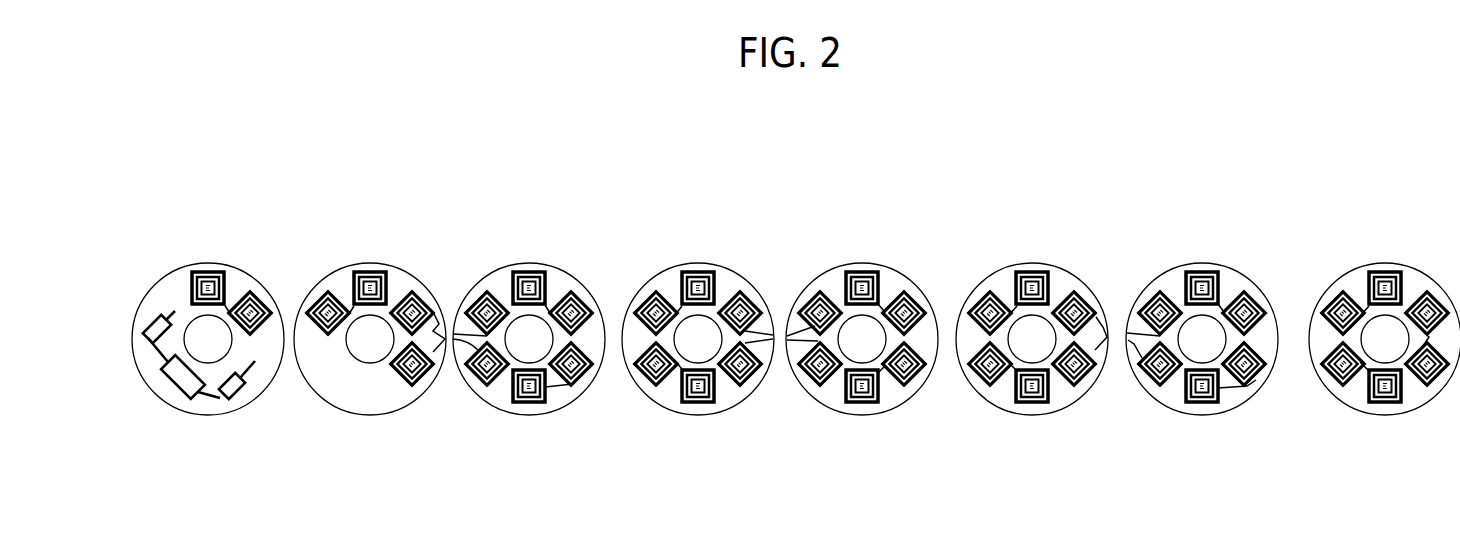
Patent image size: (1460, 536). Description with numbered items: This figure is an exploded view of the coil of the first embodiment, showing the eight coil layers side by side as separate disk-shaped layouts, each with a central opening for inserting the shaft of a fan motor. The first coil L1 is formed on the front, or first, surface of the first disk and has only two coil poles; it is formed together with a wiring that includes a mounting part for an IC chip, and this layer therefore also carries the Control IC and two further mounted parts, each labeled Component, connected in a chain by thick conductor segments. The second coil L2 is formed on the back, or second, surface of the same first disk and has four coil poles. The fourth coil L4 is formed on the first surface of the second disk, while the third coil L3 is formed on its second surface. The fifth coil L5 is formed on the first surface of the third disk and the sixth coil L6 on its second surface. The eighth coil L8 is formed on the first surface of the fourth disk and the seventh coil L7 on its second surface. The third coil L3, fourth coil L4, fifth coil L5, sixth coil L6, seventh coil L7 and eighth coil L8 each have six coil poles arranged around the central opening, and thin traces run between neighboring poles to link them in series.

The first coil L1 is at (208, 339).
The second coil L2 is at (370, 339).
The third coil L3 is at (529, 339).
The fourth coil L4 is at (698, 339).
The fifth coil L5 is at (862, 339).
The sixth coil L6 is at (1032, 339).
The seventh coil L7 is at (1202, 339).
The eighth coil L8 is at (1384, 339).
The component Component is at (152, 325).
The control IC Control IC is at (170, 378).